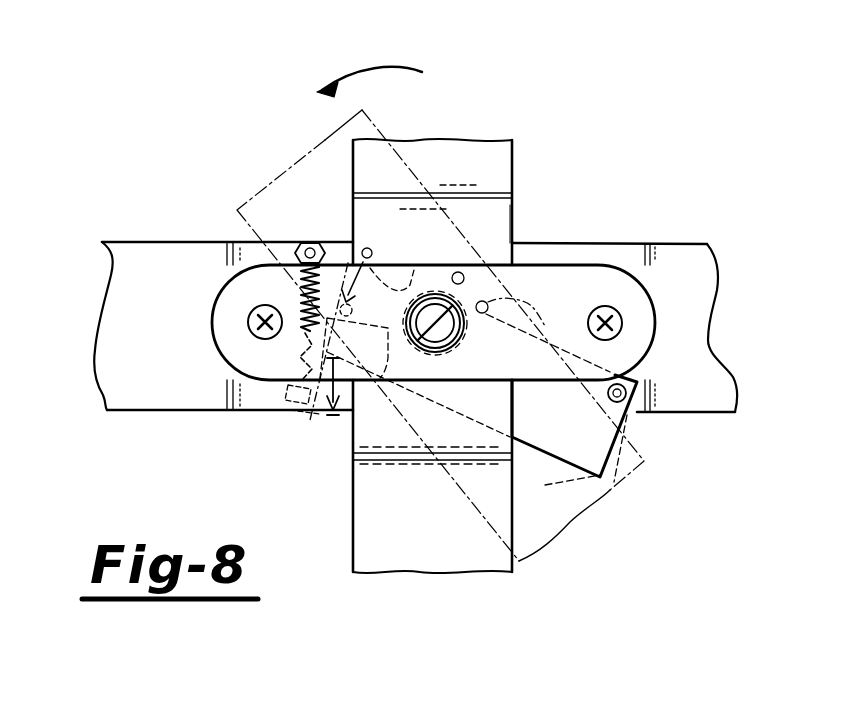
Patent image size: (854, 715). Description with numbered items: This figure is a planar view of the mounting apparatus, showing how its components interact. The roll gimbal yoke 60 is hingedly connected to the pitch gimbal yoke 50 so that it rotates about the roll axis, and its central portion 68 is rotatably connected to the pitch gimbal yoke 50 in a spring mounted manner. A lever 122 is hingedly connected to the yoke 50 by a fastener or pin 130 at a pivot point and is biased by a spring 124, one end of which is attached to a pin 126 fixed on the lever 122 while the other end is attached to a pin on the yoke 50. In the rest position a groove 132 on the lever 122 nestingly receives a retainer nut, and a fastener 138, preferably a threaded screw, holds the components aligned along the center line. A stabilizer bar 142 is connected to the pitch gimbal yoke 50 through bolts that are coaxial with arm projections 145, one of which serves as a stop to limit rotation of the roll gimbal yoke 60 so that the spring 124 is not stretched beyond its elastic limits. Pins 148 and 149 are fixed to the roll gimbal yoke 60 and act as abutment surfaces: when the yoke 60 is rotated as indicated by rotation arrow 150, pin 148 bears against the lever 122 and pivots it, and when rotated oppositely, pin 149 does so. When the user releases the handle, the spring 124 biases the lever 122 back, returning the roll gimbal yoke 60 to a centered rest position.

The pitch gimbal yoke 50 is at (660, 244).
The roll gimbal yoke 60 is at (353, 484).
The central portion of roll gimbal yoke 68 is at (514, 240).
The lever 122 is at (557, 470).
The spring 124 is at (305, 358).
The pin 126 is at (290, 416).
The fastener or pin 130 is at (312, 243).
The groove 132 is at (400, 278).
The fastener 138 is at (448, 328).
The stabilizer bar 142 is at (554, 265).
The arm projections 145 is at (240, 277).
The pin 148 is at (371, 248).
The pin 149 is at (512, 312).
The rotation arrow 150 is at (410, 70).